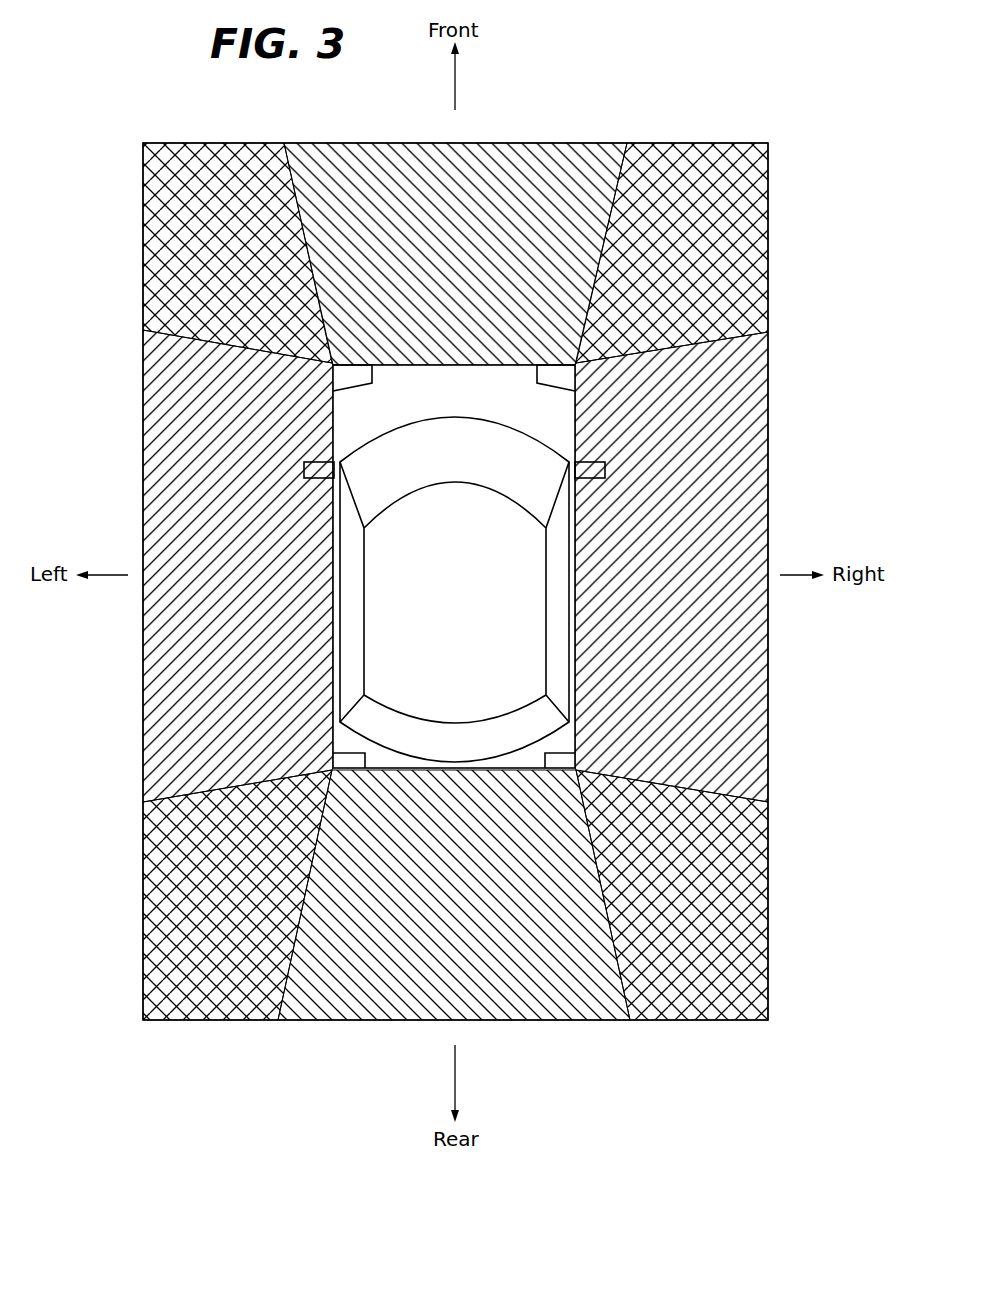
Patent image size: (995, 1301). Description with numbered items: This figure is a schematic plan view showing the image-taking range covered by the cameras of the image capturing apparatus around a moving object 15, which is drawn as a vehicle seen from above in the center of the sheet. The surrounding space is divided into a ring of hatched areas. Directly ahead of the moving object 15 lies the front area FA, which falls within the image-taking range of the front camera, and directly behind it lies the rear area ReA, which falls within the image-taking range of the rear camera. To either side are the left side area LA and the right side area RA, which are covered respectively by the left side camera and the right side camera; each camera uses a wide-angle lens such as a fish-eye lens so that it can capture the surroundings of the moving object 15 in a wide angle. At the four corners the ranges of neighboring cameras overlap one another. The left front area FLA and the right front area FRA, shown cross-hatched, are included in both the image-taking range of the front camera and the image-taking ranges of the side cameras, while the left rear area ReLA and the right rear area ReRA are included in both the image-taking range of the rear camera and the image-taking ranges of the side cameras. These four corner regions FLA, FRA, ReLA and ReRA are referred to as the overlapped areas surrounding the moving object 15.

The left front area FLA is at (210, 143).
The front area FA is at (508, 143).
The right front area FRA is at (714, 143).
The left side area LA is at (156, 451).
The right side area RA is at (742, 477).
The left rear area ReLA is at (205, 1020).
The rear area ReA is at (350, 1001).
The right rear area ReRA is at (712, 1020).
The moving object 15 is at (328, 657).